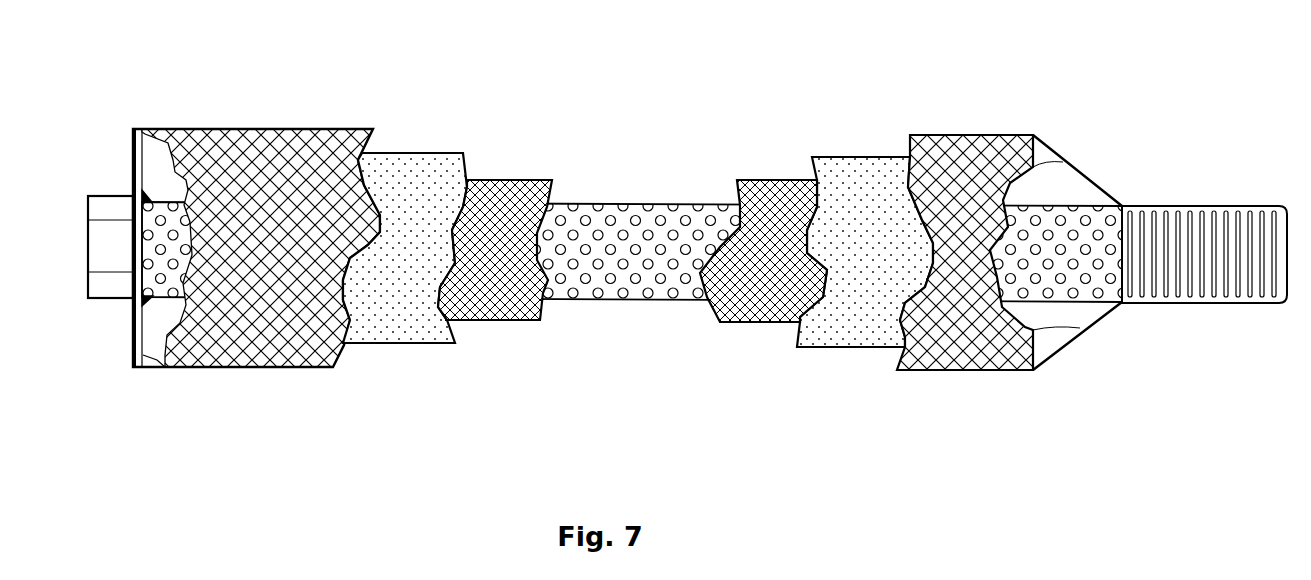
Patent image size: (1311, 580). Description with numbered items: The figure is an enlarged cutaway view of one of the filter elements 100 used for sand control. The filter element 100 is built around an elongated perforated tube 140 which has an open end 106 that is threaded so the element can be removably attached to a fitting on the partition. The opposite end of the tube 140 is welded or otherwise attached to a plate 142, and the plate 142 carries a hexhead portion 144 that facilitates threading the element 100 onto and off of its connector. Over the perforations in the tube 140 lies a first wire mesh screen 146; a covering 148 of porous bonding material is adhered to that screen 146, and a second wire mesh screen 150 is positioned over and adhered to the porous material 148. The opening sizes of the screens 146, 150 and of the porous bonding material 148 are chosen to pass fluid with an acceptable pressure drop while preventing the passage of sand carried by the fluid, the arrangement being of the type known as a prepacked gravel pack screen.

The filter element 100 is at (338, 118).
The open end 106 is at (1237, 212).
The elongated perforated tube 140 is at (157, 203).
The plate 142 is at (135, 368).
The hexhead portion 144 is at (102, 203).
The first wire mesh screen 146 is at (510, 313).
The covering of porous bonding material 148 is at (400, 338).
The second wire mesh screen 150 is at (243, 357).